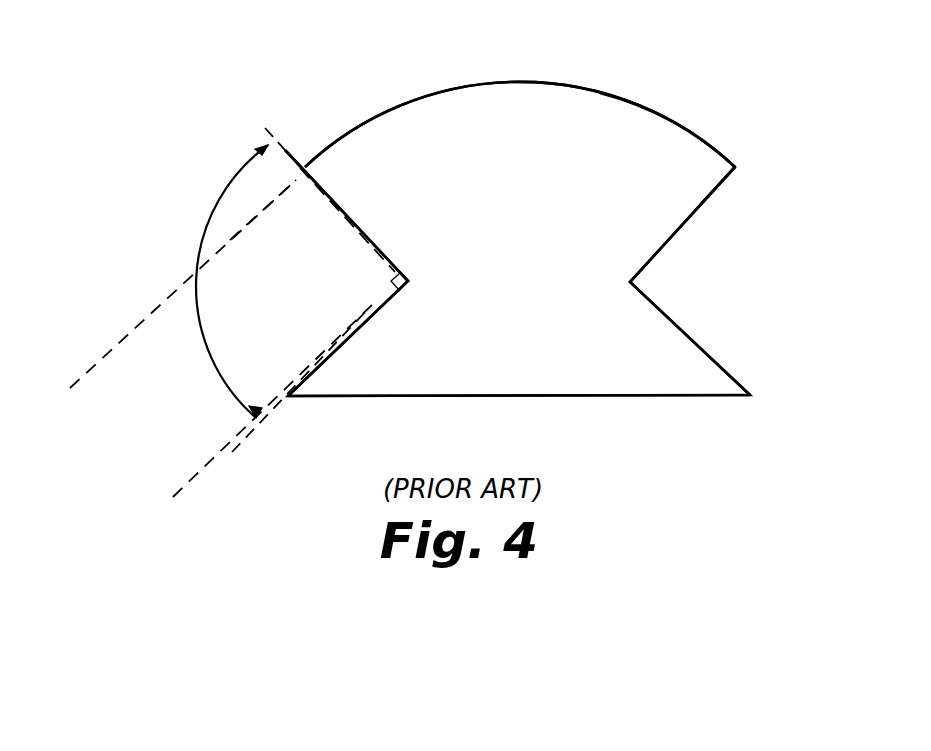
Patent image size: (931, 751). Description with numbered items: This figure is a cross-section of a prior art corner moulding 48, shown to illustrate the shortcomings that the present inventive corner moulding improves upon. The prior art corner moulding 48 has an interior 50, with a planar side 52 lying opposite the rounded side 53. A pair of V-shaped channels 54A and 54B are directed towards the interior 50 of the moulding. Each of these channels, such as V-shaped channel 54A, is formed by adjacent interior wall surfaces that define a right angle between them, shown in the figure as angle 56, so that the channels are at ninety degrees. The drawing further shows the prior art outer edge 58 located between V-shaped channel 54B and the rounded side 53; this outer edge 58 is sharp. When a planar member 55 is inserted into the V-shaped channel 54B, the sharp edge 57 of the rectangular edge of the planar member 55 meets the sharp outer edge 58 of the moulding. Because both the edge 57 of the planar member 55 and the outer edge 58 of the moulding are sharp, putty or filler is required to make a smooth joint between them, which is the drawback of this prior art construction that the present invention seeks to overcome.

The prior art corner moulding 48 is at (533, 83).
The interior 50 is at (500, 280).
The planar side 52 is at (627, 395).
The rounded side 53 is at (658, 110).
The V-shaped channel 54A is at (372, 245).
The V-shaped channel 54B is at (672, 235).
The planar member 55 is at (102, 355).
The angle 56 is at (207, 335).
The sharp edge 57 is at (296, 180).
The outer edge 58 is at (735, 167).